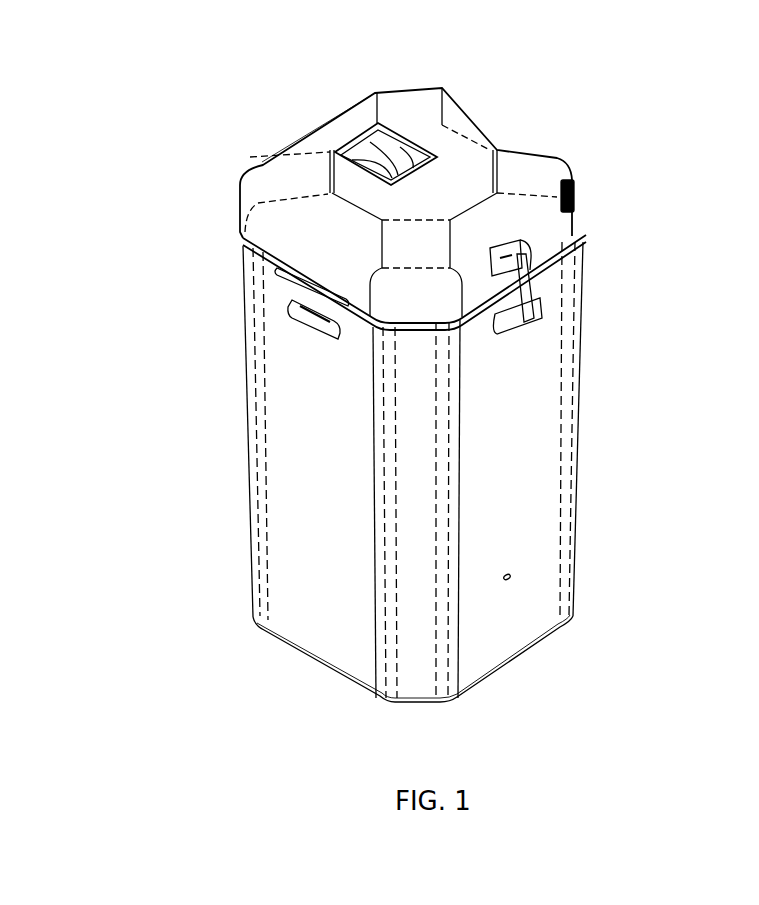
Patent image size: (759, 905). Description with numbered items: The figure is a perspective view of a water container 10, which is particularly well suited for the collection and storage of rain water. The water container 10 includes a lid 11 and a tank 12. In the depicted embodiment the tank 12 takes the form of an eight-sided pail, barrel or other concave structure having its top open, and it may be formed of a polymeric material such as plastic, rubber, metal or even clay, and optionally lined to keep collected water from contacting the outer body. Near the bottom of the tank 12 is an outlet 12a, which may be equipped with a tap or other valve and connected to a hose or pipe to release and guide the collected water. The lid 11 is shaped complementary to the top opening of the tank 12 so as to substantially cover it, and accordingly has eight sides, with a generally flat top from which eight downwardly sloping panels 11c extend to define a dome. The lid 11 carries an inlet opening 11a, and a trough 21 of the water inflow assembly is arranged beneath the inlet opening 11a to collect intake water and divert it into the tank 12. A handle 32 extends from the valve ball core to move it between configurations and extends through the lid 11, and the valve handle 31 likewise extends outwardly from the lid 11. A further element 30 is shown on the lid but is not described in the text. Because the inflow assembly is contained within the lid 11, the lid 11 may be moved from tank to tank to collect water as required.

The water container 10 is at (200, 165).
The lid 11 is at (590, 207).
The inlet opening 11a is at (407, 140).
The downwardly sloping panels 11c is at (330, 133).
The tank 12 is at (580, 456).
The outlet 12a is at (512, 578).
The trough 21 is at (400, 168).
The latch keeper 30 is at (573, 182).
The valve handle 31 is at (540, 300).
The handle 32 is at (512, 252).